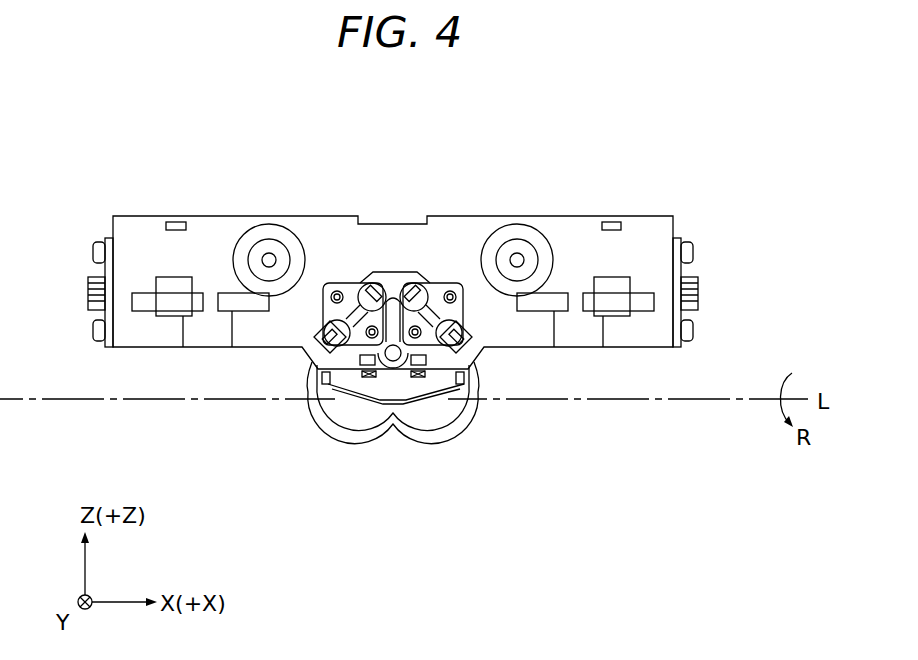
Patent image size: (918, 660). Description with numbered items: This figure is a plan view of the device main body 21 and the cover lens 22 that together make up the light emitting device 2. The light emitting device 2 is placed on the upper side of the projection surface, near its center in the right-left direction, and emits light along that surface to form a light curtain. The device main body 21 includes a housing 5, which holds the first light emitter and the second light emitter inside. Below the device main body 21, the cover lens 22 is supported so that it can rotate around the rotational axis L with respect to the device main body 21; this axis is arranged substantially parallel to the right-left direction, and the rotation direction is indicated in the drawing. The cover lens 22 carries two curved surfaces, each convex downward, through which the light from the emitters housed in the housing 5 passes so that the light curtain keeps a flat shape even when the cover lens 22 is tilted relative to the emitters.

The light emitting device 2 is at (186, 188).
The device main body 21 is at (562, 216).
The housing 5 is at (642, 230).
The cover lens 22 is at (462, 424).